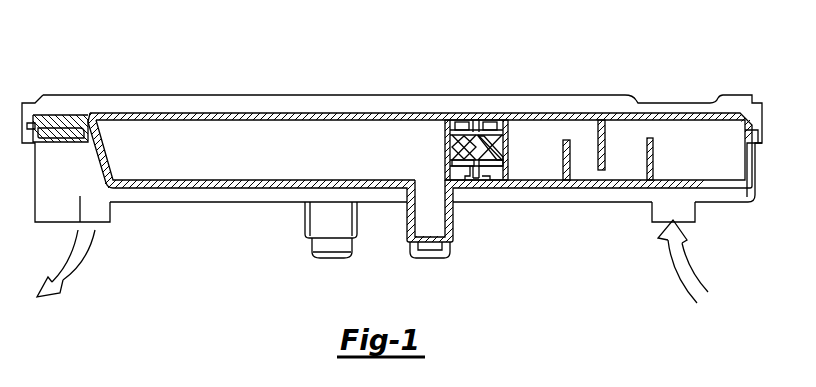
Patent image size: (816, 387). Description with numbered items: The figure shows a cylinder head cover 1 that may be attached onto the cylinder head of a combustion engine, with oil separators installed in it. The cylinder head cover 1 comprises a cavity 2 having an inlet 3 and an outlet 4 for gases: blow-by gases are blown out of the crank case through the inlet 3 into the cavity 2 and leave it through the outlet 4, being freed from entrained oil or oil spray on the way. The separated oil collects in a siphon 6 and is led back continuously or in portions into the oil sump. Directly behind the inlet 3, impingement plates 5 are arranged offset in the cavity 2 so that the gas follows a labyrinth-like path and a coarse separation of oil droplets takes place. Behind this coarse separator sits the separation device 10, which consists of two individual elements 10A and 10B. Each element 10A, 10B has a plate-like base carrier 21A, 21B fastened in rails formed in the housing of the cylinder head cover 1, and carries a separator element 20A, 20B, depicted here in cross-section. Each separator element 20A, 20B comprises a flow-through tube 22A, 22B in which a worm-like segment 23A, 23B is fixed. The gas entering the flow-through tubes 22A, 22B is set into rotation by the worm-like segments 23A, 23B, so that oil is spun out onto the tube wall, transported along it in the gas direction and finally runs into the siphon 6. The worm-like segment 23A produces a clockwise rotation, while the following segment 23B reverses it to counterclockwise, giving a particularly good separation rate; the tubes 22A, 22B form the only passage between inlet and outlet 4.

The cylinder head cover 1 is at (590, 97).
The cavity 2 is at (288, 130).
The inlet 3 is at (686, 212).
The outlet 4 is at (100, 212).
The impingement plates 5 is at (647, 155).
The siphon 6 is at (418, 222).
The separation device 10 is at (469, 119).
The element 10A is at (486, 125).
The element 10B is at (458, 125).
The separator element 20A is at (505, 172).
The separator element 20B is at (447, 170).
The base carrier 21A is at (490, 168).
The base carrier 21B is at (458, 188).
The flow-through tube 22A is at (490, 127).
The flow-through tube 22B is at (460, 127).
The worm-like segment 23A is at (500, 147).
The worm-like segment 23B is at (452, 147).